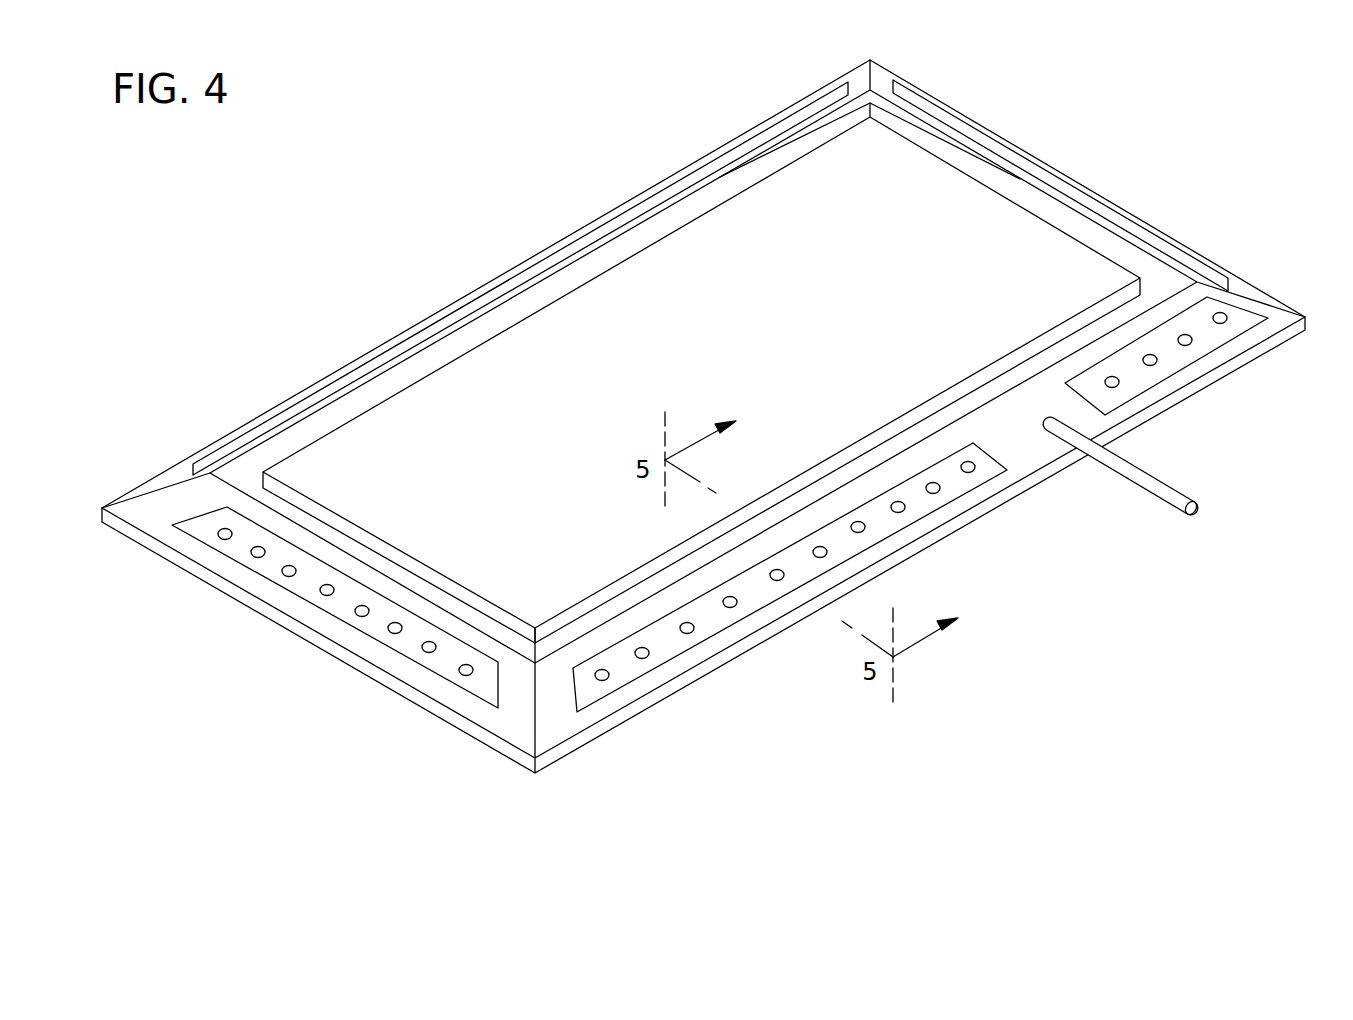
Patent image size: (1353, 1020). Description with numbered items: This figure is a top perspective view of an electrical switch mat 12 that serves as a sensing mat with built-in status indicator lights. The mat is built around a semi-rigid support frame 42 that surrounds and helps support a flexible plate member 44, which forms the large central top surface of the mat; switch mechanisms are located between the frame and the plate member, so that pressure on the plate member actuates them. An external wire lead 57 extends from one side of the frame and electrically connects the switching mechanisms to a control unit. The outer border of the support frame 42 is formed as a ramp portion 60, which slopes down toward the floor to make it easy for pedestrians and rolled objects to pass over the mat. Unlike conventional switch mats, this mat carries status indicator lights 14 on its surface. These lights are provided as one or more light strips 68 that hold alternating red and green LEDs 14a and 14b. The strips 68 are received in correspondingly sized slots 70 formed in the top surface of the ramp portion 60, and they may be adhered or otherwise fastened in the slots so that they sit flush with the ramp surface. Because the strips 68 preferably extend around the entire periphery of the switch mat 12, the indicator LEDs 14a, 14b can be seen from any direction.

The electrical switch mat 12 is at (233, 289).
The support frame 42 is at (1200, 252).
The flexible plate member 44 is at (800, 272).
The external wire lead 57 is at (1157, 488).
The ramp portion 60 is at (155, 474).
The light strips 68 is at (305, 580).
The slots 70 is at (962, 498).
The status indicator lights 14 is at (585, 693).
The red LEDs 14a is at (429, 650).
The green LEDs 14b is at (466, 667).